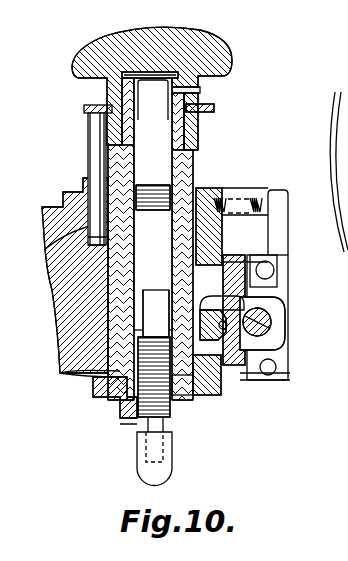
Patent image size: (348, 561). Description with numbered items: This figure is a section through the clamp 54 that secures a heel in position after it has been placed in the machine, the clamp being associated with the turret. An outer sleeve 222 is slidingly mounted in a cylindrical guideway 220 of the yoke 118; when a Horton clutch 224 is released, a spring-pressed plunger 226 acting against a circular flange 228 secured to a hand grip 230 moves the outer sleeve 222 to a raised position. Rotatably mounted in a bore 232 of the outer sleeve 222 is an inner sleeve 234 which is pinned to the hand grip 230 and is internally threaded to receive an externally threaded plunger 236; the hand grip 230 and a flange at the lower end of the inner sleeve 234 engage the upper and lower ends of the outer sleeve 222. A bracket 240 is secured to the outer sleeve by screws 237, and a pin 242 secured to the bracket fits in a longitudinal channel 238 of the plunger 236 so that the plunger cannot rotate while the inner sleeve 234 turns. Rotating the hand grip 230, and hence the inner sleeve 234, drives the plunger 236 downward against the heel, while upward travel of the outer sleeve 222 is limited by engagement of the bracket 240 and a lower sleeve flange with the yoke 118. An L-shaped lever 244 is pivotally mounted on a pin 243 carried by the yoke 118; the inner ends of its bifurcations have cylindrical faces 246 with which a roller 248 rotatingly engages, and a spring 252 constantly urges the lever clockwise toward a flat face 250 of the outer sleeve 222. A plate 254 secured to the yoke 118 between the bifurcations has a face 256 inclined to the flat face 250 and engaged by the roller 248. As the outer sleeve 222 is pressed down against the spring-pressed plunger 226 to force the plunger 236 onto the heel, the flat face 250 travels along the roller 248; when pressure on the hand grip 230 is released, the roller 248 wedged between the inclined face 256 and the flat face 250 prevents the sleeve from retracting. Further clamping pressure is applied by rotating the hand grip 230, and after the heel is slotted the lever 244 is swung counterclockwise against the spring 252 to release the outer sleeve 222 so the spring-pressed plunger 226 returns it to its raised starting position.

The clamp 54 is at (62, 378).
The yoke 118 is at (62, 296).
The cylindrical guideway 220 is at (45, 236).
The outer sleeve 222 is at (120, 165).
The Horton clutch 224 is at (270, 392).
The spring-pressed plunger 226 is at (96, 141).
The circular flange 228 is at (214, 108).
The hand grip 230 is at (198, 54).
The bore 232 is at (180, 150).
The inner sleeve 234 is at (186, 171).
The plunger 236 is at (133, 405).
The screws 237 is at (85, 372).
The longitudinal channel 238 is at (136, 433).
The bracket 240 is at (176, 426).
The pin 242 is at (172, 430).
The pin 243 is at (265, 320).
The L-shaped lever 244 is at (282, 267).
The cylindrical faces 246 is at (197, 398).
The roller 248 is at (212, 312).
The flat face 250 is at (200, 184).
The spring 252 is at (256, 207).
The plate 254 is at (255, 378).
The face 256 is at (233, 352).